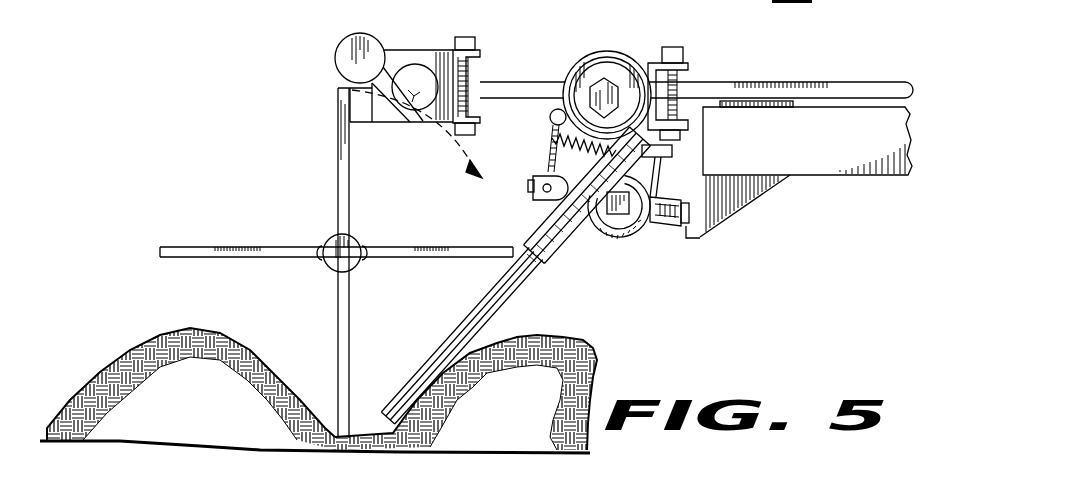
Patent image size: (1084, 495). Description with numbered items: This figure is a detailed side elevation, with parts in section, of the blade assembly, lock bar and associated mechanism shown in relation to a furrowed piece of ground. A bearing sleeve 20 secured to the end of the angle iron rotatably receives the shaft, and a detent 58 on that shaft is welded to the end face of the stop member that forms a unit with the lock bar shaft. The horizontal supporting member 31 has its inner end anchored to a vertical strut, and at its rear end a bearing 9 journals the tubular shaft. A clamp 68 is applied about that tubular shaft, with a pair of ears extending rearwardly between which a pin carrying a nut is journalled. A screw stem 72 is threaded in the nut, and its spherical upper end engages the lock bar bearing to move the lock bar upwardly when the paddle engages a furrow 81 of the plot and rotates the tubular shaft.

The bearing sleeve 20 is at (345, 59).
The detent 58 is at (358, 117).
The screw stem 72 is at (546, 158).
The clamp 68 is at (598, 232).
The bearing 9 is at (624, 235).
The furrow 81 is at (465, 355).
The horizontal supporting member 31 is at (816, 172).